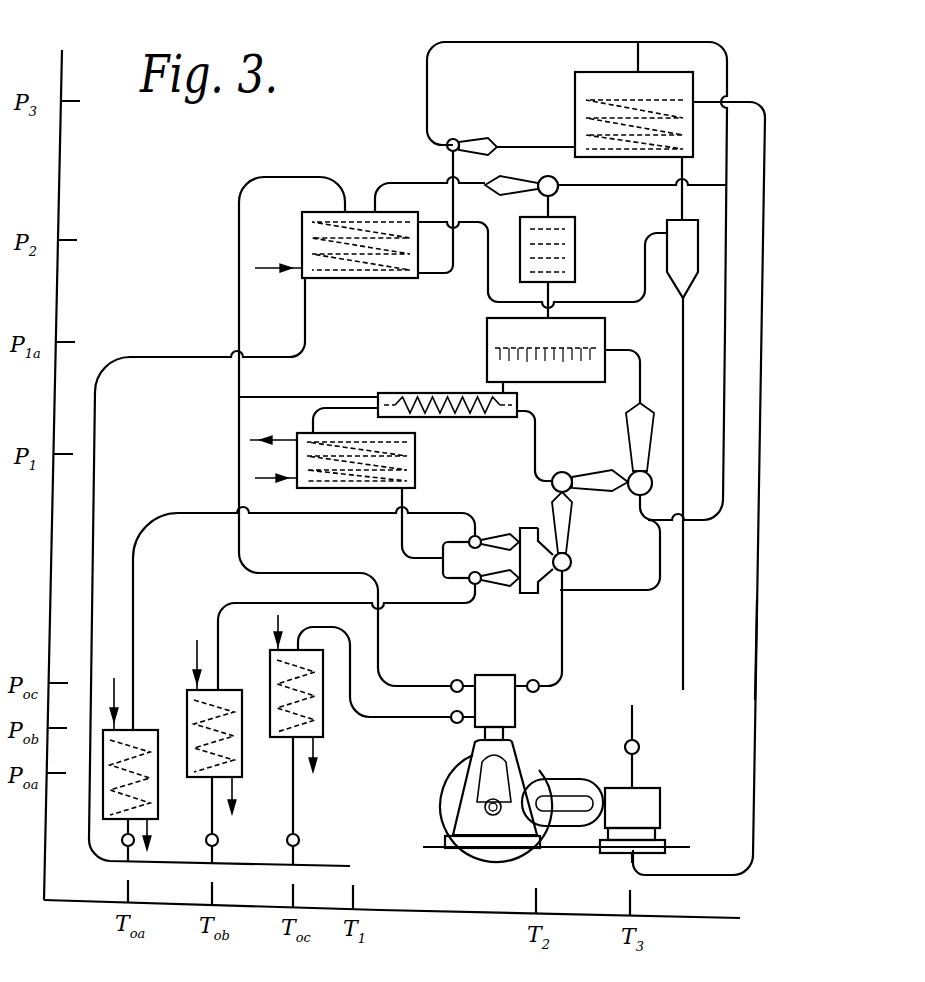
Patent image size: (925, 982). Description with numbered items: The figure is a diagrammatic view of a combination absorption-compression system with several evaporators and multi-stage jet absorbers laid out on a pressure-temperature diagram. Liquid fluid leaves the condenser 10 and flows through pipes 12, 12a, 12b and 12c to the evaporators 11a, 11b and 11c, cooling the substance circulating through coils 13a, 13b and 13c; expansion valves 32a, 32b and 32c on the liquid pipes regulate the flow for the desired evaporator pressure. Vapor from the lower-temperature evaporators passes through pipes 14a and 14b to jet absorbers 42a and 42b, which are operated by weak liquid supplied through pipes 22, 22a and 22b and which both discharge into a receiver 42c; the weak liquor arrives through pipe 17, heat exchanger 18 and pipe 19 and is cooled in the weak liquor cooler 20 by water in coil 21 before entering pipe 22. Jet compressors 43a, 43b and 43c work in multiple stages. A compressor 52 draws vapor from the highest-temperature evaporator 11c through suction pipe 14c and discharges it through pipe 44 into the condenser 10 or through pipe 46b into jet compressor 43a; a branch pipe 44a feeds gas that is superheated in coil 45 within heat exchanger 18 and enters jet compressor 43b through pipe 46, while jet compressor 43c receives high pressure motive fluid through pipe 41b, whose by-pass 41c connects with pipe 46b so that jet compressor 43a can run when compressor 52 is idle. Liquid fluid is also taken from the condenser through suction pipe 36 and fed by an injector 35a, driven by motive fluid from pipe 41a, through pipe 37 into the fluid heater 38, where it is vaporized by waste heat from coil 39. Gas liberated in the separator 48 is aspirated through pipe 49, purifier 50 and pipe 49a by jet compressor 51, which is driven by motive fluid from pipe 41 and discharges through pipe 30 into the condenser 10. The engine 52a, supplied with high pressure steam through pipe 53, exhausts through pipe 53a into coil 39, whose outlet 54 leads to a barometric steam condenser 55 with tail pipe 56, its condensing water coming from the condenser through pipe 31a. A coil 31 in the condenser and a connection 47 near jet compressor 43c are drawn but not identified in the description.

The condenser 10 is at (302, 244).
The evaporator 11a is at (158, 781).
The evaporator 11b is at (242, 743).
The evaporator 11c is at (323, 716).
The pipe 12 is at (123, 360).
The pipe 12a is at (149, 829).
The pipe 12b is at (213, 811).
The pipe 12c is at (295, 781).
The coil 13a is at (128, 750).
The coil 13b is at (213, 707).
The coil 13c is at (288, 672).
The pipe 14a is at (307, 518).
The pipe 14b is at (411, 606).
The suction pipe 14c is at (411, 719).
The pipe 17 is at (512, 390).
The heat exchanger 18 is at (424, 418).
The pipe 19 is at (313, 427).
The weak liquor cooler 20 is at (416, 449).
The coil 21 is at (383, 462).
The pipe 22 is at (400, 540).
The pipe 22a is at (456, 543).
The pipe 22b is at (456, 578).
The pipe 30 is at (390, 180).
The condenser coil 31 is at (363, 232).
The pipe 31a is at (492, 302).
The expansion valve 32a is at (125, 846).
The expansion valve 32b is at (209, 846).
The expansion valve 32c is at (291, 846).
The jet-pump or injector 35a is at (470, 140).
The suction pipe 36 is at (441, 275).
The pipe 37 is at (557, 147).
The fluid heater 38 is at (573, 112).
The coil 39 is at (640, 118).
The pipe 41 is at (633, 188).
The pipe 41a is at (426, 70).
The pipe 41b is at (730, 64).
The by-pass 41c is at (616, 592).
The jet absorber 42a is at (480, 538).
The jet absorber 42b is at (482, 585).
The receiver 42c is at (527, 592).
The jet compressor 43a is at (562, 538).
The jet compressor 43b is at (572, 488).
The jet compressor 43c is at (637, 470).
The pipe 44 is at (240, 248).
The branch pipe 44a is at (308, 384).
The coil 45 is at (463, 403).
The pipe 46 is at (540, 429).
The pipe 46b is at (562, 655).
The line 47 is at (641, 359).
The separator 48 is at (487, 357).
The pipe 49 is at (553, 300).
The pipe 49a is at (553, 211).
The purifier 50 is at (576, 246).
The jet compressor 51 is at (546, 178).
The compressor 52 is at (497, 700).
The engine 52a is at (661, 809).
The pipe 53 is at (640, 727).
The pipe 53a is at (754, 736).
The outlet 54 is at (681, 200).
The steam condenser 55 is at (686, 273).
The tail pipe 56 is at (680, 594).